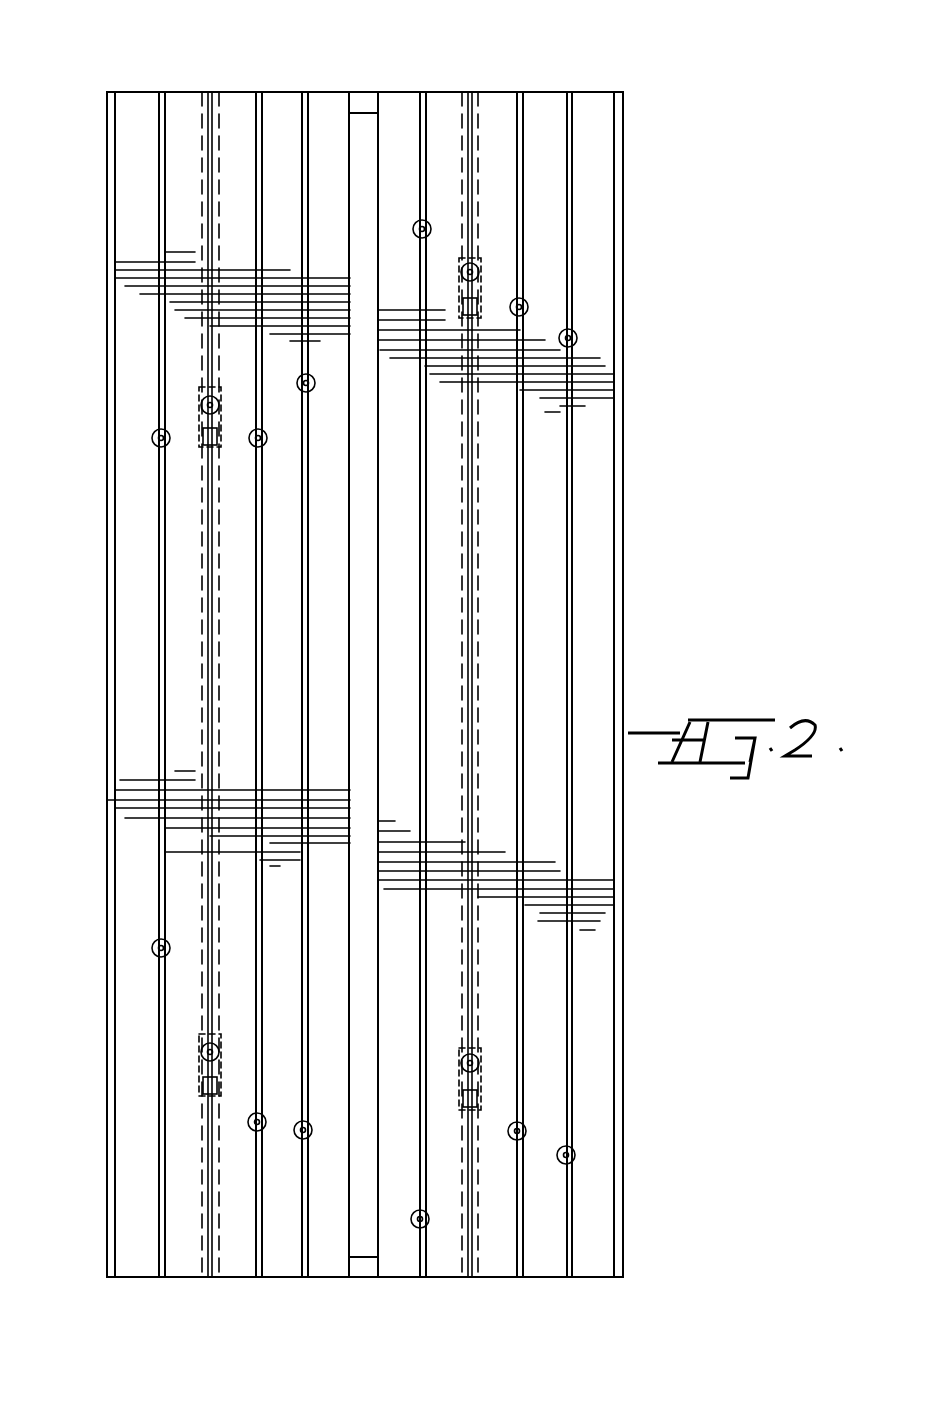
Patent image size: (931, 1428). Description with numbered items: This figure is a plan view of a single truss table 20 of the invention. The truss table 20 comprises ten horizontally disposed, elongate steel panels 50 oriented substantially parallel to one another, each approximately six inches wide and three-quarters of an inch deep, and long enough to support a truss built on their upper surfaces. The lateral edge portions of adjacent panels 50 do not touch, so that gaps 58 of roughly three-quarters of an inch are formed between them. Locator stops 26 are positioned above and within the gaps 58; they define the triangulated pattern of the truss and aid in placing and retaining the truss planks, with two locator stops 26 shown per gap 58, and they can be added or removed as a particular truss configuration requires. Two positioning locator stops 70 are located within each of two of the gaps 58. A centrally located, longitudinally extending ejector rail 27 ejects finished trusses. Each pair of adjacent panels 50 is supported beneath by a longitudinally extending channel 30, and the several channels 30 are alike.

The truss table 20 is at (660, 157).
The locator stops 26 is at (295, 376).
The ejector rail 27 is at (361, 1265).
The channel 30 is at (302, 90).
The steel panels 50 is at (232, 632).
The gaps 58 is at (256, 743).
The positioning locator stops 70 is at (198, 402).